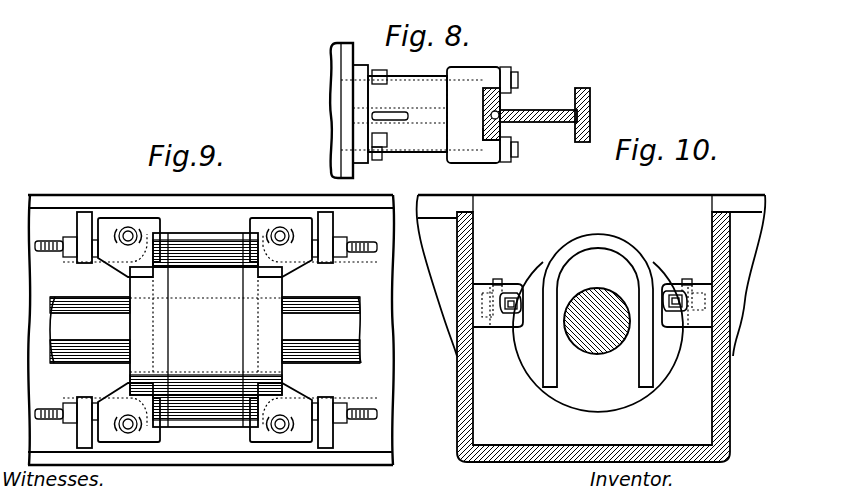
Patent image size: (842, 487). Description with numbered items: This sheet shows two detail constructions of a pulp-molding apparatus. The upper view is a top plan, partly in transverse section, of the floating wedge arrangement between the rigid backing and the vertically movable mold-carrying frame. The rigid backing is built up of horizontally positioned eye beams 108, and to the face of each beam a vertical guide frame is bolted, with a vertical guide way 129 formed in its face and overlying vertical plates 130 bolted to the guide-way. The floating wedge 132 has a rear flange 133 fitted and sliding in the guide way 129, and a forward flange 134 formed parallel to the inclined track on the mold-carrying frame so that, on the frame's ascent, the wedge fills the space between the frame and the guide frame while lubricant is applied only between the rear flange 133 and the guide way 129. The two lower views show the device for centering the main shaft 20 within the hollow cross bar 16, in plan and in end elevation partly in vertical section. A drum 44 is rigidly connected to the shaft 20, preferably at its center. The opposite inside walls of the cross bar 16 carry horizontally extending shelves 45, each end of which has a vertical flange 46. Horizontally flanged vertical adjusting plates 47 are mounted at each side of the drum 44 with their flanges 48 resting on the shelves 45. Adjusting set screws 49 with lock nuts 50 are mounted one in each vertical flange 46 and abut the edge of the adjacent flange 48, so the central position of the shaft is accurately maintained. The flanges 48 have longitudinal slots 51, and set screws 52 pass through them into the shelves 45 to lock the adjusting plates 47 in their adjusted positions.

In FIG. 9, the hollow cross bar 16 is at (358, 464).
In FIG. 10, the hollow cross bar 16 is at (458, 390).
In FIG. 9, the main shaft 20 is at (361, 308).
In FIG. 10, the main shaft 20 is at (594, 352).
In FIG. 9, the drum 44 is at (188, 258).
In FIG. 10, the drum 44 is at (567, 402).
In FIG. 9, the shelves 45 is at (237, 222).
In FIG. 9, the vertical flange 46 is at (85, 262).
In FIG. 10, the vertical flange 46 is at (700, 316).
In FIG. 9, the adjusting plates 47 is at (162, 291).
In FIG. 10, the adjusting plates 47 is at (639, 360).
In FIG. 9, the flanges 48 is at (302, 222).
In FIG. 9, the adjusting set screws 49 is at (358, 243).
In FIG. 10, the adjusting set screws 49 is at (506, 330).
In FIG. 9, the lock nuts 50 is at (370, 262).
In FIG. 10, the lock nuts 50 is at (494, 331).
In FIG. 9, the longitudinal slots 51 is at (136, 228).
In FIG. 9, the set screws 52 is at (123, 232).
In FIG. 10, the set screws 52 is at (498, 282).
In FIG. 8, the eye beams 108 is at (343, 58).
In FIG. 8, the vertical guide way 129 is at (488, 94).
In FIG. 8, the vertical plates 130 is at (506, 90).
In FIG. 8, the floating wedge 132 is at (546, 109).
In FIG. 8, the rear flange 133 is at (486, 146).
In FIG. 8, the forward flange 134 is at (592, 130).